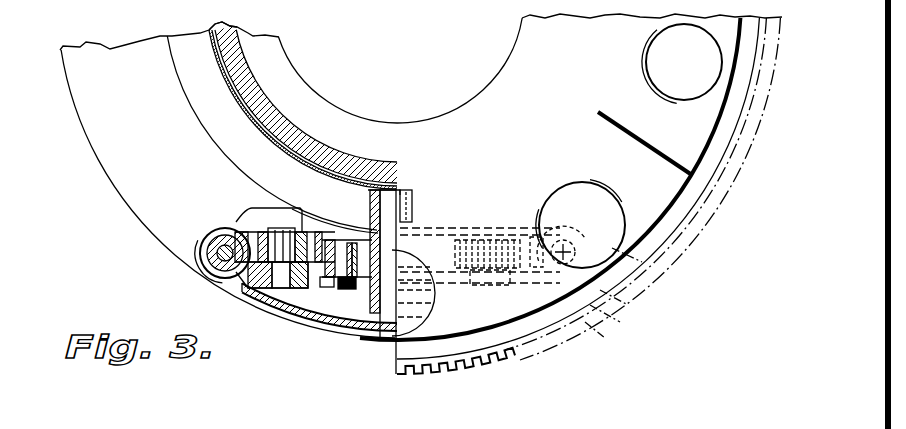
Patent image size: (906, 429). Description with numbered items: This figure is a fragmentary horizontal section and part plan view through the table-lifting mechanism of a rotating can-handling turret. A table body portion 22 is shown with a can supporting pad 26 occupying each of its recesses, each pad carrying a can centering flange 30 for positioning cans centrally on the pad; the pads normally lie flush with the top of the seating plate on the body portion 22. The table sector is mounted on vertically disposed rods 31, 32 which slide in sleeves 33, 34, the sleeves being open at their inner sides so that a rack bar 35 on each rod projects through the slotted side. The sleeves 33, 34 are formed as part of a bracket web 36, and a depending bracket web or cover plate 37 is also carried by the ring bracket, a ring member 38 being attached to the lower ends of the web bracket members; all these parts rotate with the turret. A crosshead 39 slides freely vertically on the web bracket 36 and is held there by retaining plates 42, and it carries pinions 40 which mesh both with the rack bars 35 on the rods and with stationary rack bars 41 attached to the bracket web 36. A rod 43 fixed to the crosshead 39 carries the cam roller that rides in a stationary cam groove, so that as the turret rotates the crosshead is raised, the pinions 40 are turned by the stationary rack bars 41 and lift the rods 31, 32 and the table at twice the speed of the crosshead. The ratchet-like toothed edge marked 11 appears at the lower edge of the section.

The ratchet teeth 11 is at (463, 364).
The table body portion 22 is at (663, 185).
The can supporting pad 26 is at (629, 146).
The can centering flange 30 is at (583, 186).
The vertically disposed rod 31 is at (207, 249).
The vertically disposed rod 32 is at (635, 262).
The sleeve 33 is at (213, 226).
The sleeve 34 is at (602, 315).
The rack bar 35 is at (603, 333).
The bracket web 36 is at (320, 243).
The depending bracket web or cover plate 37 is at (277, 317).
The ring member 38 is at (102, 140).
The crosshead 39 is at (357, 298).
The pinion 40 is at (595, 353).
The stationary rack bar 41 is at (543, 225).
The retaining plate 42 is at (382, 332).
The rod 43 is at (413, 214).